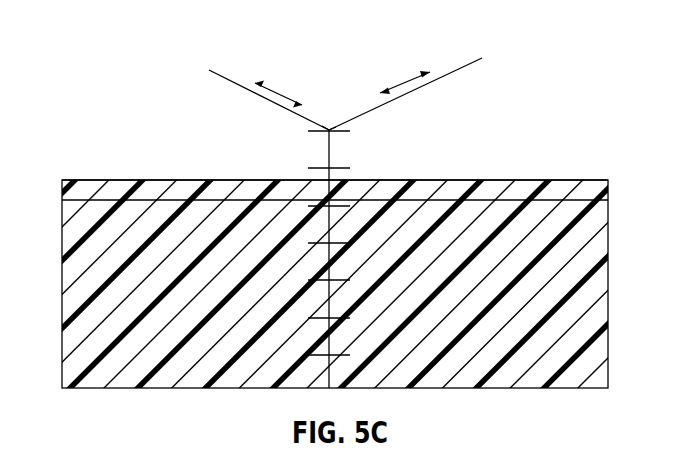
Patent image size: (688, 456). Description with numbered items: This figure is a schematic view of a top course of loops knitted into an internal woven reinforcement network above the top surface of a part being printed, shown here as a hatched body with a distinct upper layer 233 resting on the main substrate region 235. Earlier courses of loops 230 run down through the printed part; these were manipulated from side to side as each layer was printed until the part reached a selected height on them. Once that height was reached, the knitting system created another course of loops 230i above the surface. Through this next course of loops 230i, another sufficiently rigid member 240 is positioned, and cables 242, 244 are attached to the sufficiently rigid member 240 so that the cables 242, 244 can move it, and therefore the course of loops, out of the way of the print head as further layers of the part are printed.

The course of loops 230 is at (330, 190).
The next course of loops 230i is at (330, 158).
The surface layer 233 is at (135, 179).
The substrate 235 is at (538, 179).
The sufficiently rigid member 240 is at (330, 129).
The cable 242 is at (240, 84).
The cable 244 is at (445, 74).